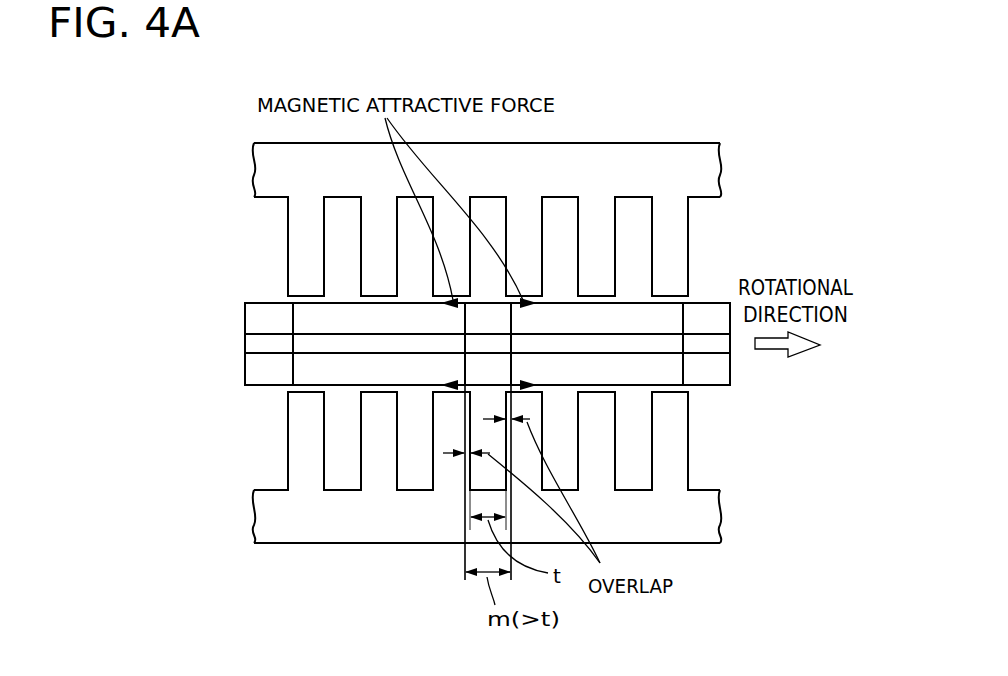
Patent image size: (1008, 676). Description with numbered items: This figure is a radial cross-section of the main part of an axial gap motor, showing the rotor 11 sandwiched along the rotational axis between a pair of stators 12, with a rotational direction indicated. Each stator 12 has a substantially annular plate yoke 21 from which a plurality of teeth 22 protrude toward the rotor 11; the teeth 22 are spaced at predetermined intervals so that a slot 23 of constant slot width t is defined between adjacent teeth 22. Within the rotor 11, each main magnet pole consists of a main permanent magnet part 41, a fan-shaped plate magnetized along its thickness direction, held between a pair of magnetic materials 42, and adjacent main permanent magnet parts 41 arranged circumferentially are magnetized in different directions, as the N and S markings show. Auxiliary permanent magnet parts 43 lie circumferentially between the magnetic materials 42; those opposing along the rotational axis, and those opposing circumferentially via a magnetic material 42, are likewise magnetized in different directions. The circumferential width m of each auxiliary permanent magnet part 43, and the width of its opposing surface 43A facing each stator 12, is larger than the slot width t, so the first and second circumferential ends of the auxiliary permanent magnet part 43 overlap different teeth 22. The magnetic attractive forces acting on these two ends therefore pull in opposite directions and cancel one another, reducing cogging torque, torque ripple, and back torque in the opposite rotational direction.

The rotor 11 is at (224, 342).
The stator 12 is at (236, 159).
The yoke 21 is at (267, 168).
The tooth 22 is at (303, 227).
The slot 23 is at (342, 258).
The main permanent magnet part 41 is at (625, 343).
The magnetic material 42 is at (652, 362).
The auxiliary permanent magnet part 43 is at (511, 368).
The opposing surface 43A is at (483, 384).